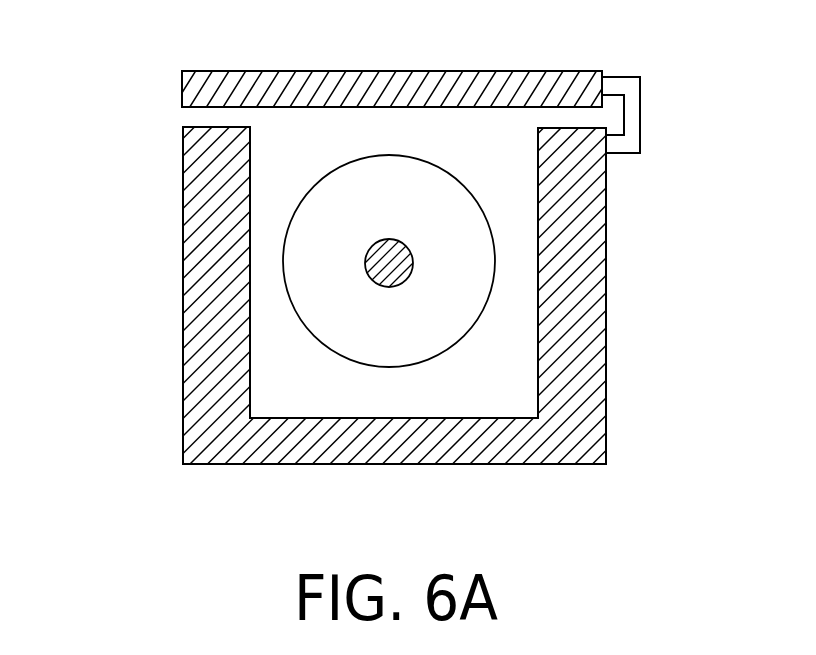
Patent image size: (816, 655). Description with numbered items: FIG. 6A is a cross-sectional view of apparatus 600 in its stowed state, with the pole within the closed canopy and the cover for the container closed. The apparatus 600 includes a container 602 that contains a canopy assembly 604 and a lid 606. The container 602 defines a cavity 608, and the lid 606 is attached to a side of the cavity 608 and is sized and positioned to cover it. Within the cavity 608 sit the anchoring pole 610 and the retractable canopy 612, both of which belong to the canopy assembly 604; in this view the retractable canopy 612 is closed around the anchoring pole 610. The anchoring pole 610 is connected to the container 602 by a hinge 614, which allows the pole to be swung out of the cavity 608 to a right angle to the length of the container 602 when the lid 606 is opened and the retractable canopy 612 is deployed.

The apparatus 600 is at (408, 259).
The container 602 is at (606, 278).
The canopy assembly 604 is at (498, 186).
The lid 606 is at (540, 71).
The cavity 608 is at (316, 157).
The anchoring pole 610 is at (386, 287).
The retractable canopy 612 is at (290, 221).
The hinge 614 is at (640, 118).